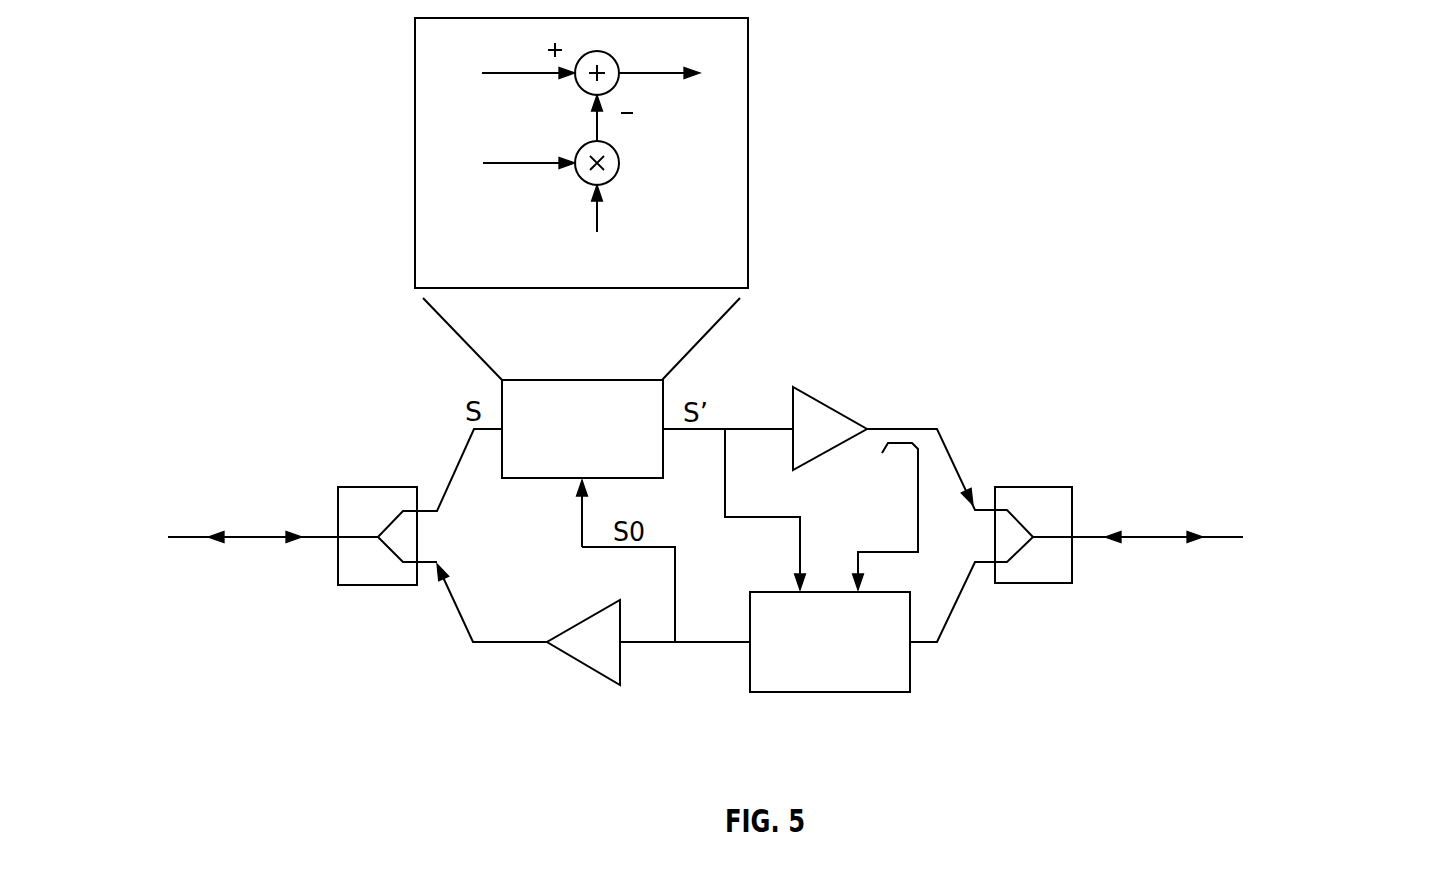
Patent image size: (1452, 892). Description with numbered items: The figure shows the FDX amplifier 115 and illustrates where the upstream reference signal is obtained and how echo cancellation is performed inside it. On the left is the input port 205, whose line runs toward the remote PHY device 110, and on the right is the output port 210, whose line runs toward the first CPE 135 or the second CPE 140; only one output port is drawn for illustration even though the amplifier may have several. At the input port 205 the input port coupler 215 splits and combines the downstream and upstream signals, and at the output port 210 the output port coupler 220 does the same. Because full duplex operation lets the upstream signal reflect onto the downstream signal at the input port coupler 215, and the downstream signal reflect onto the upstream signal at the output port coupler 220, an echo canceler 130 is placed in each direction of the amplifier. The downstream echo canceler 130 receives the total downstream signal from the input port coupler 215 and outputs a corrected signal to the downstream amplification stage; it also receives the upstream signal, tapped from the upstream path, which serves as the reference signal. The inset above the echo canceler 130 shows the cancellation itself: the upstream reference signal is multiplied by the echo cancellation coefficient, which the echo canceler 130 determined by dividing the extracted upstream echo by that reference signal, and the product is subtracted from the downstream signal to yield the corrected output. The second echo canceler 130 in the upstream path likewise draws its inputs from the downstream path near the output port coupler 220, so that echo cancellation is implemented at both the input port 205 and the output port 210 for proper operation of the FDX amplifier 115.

The FDX amplifier 115 is at (222, 286).
The echo canceler 130 is at (536, 479).
The input port coupler 215 is at (363, 487).
The output port coupler 220 is at (1048, 487).
The input port 205 is at (196, 586).
The output port 210 is at (1250, 572).
The remote PHY device 110 is at (196, 512).
The first CPE 135 is at (1332, 472).
The second CPE 140 is at (1330, 537).